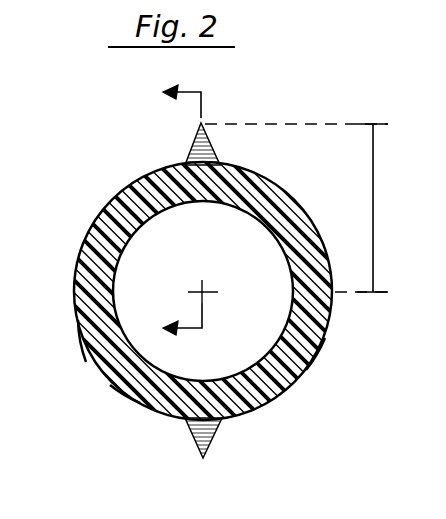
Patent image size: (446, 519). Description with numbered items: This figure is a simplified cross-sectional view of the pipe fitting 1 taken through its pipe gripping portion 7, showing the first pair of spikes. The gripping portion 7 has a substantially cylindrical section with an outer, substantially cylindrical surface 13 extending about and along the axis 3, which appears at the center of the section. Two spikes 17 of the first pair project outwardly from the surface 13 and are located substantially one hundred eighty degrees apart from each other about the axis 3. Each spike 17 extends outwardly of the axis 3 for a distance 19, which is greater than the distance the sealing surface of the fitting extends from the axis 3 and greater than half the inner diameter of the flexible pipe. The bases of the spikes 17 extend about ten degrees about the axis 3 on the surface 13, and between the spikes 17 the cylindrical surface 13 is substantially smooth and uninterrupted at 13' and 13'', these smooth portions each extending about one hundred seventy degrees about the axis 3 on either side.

The pipe fitting 1 is at (103, 110).
The axis 3 is at (205, 291).
The pipe gripping portion 7 is at (97, 223).
The outer cylindrical surface 13 is at (106, 426).
The smooth portion of cylindrical surface 13' is at (71, 367).
The smooth portion of cylindrical surface 13'' is at (335, 372).
The spikes 17 is at (187, 160).
The distance 19 is at (373, 197).